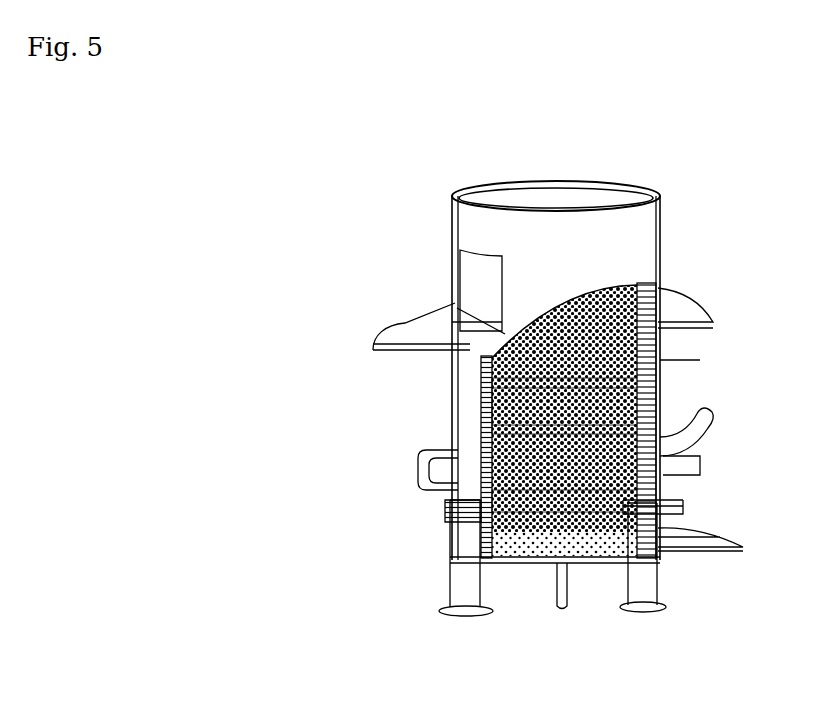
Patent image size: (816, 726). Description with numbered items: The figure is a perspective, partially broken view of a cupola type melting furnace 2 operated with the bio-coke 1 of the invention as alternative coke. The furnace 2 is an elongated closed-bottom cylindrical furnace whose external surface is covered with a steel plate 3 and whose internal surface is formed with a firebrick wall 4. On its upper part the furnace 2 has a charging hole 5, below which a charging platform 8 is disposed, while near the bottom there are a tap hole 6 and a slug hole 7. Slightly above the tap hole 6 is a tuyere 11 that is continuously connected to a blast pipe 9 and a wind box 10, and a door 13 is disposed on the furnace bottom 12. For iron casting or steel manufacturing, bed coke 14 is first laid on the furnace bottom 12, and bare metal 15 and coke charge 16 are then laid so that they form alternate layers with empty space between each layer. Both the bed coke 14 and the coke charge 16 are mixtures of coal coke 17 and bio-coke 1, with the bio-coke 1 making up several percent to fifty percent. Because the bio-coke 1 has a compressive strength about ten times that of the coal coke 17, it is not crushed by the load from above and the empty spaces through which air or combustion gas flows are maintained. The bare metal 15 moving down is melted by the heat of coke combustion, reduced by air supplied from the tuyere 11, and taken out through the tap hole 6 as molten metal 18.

The bio-coke 1 is at (481, 378).
The cupola type melting furnace 2 is at (601, 173).
The steel plate 3 is at (660, 343).
The firebrick wall 4 is at (660, 363).
The charging hole 5 is at (452, 272).
The tap hole 6 is at (682, 535).
The slug hole 7 is at (450, 521).
The charging platform 8 is at (420, 325).
The blast pipe 9 is at (705, 418).
The wind box 10 is at (692, 466).
The tuyere 11 is at (682, 496).
The furnace bottom 12 is at (545, 566).
The door 13 is at (581, 566).
The bed coke 14 is at (315, 485).
The bare metal 15 is at (518, 343).
The coke charge 16 is at (315, 345).
The coal coke 17 is at (481, 387).
The molten metal 18 is at (522, 567).